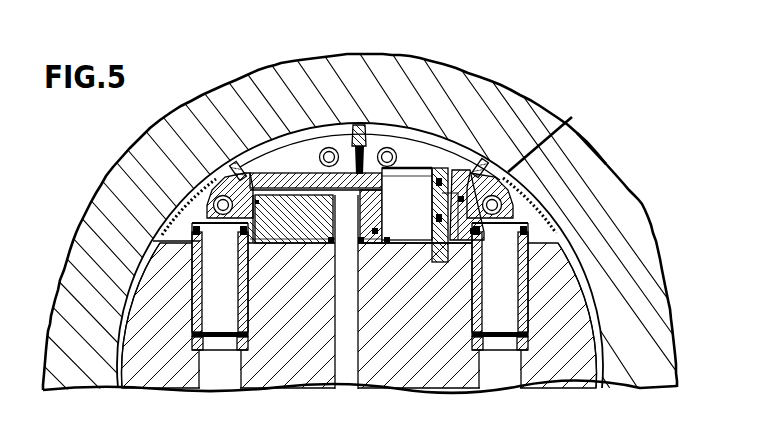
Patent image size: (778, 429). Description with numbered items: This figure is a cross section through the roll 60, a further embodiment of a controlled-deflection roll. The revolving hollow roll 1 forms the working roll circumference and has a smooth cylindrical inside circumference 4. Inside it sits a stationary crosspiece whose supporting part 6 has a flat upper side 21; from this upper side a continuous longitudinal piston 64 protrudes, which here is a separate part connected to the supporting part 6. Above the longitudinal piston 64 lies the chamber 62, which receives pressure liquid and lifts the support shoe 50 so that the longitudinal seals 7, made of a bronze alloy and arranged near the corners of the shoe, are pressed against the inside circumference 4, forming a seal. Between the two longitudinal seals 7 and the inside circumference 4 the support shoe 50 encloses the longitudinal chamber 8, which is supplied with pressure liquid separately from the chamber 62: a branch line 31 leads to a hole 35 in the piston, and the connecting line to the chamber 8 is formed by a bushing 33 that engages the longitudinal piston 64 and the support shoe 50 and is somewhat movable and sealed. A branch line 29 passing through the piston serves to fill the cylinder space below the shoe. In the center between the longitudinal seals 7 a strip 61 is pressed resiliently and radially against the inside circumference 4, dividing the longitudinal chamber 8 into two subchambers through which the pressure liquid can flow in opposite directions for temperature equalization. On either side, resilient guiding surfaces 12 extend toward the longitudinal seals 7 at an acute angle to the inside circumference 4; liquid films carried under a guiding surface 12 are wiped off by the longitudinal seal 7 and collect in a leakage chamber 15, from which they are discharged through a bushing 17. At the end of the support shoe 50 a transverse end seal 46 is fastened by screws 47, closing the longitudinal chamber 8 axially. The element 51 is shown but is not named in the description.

The hollow roll 1 is at (607, 247).
The inside circumference 4 is at (582, 226).
The supporting part 6 is at (565, 292).
The longitudinal seal 7 is at (236, 165).
The longitudinal chamber 8 is at (268, 147).
The guiding surface 12 is at (198, 188).
The leakage chamber 15 is at (550, 133).
The bushing 17 is at (198, 290).
The upper side 21 is at (155, 240).
The branch line 29 is at (343, 293).
The branch line 31 is at (410, 335).
The bushing 33 is at (420, 166).
The hole 35 is at (388, 232).
The transverse end seal 46 is at (162, 204).
The screw 47 is at (329, 147).
The support shoe 50 is at (482, 163).
The wedge 51 is at (456, 256).
The roll 60 is at (586, 128).
The strip 61 is at (390, 147).
The chamber 62 is at (304, 172).
The longitudinal piston 64 is at (452, 240).